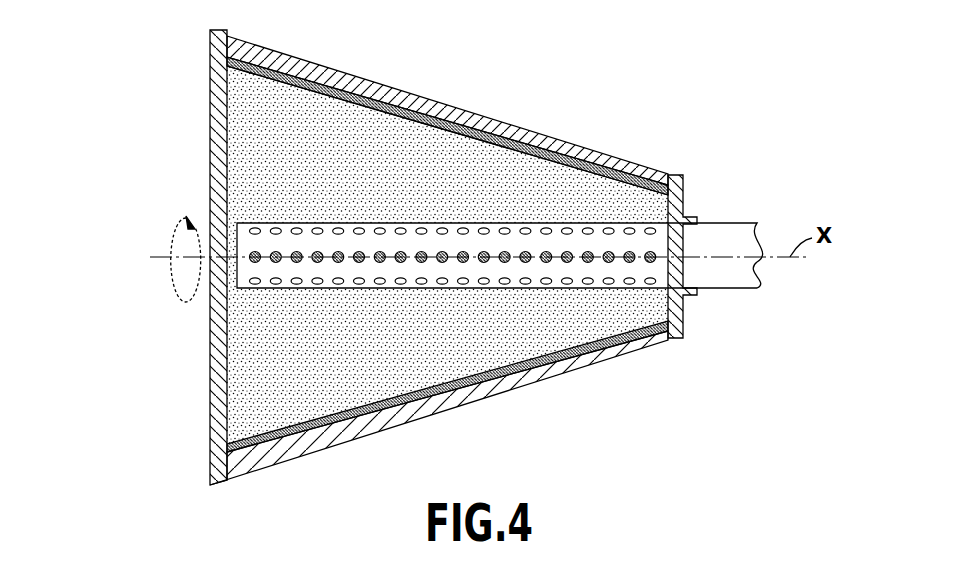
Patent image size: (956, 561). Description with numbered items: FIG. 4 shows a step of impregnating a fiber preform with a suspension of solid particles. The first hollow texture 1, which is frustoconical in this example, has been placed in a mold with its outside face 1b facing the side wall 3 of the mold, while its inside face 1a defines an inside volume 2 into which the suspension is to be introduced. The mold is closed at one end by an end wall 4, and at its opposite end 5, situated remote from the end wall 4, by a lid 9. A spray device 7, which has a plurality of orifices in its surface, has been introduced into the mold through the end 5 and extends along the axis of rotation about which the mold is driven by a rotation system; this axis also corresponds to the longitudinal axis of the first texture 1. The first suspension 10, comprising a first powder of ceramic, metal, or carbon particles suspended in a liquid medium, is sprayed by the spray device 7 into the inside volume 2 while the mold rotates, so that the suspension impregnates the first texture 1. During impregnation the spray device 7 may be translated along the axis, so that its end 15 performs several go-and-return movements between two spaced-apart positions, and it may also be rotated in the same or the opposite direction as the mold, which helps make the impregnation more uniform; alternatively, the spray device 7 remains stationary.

The first hollow texture 1 is at (418, 256).
The inside face of the first texture 1a is at (295, 84).
The outside face of the first texture 1b is at (325, 85).
The inside volume 2 is at (263, 427).
The side wall of the mold 3 is at (632, 172).
The end wall 4 is at (210, 198).
The end of the mold 5 is at (651, 178).
The spray device 7 is at (723, 272).
The lid 9 is at (683, 203).
The first suspension 10 is at (280, 150).
The end of the spray device 15 is at (228, 282).